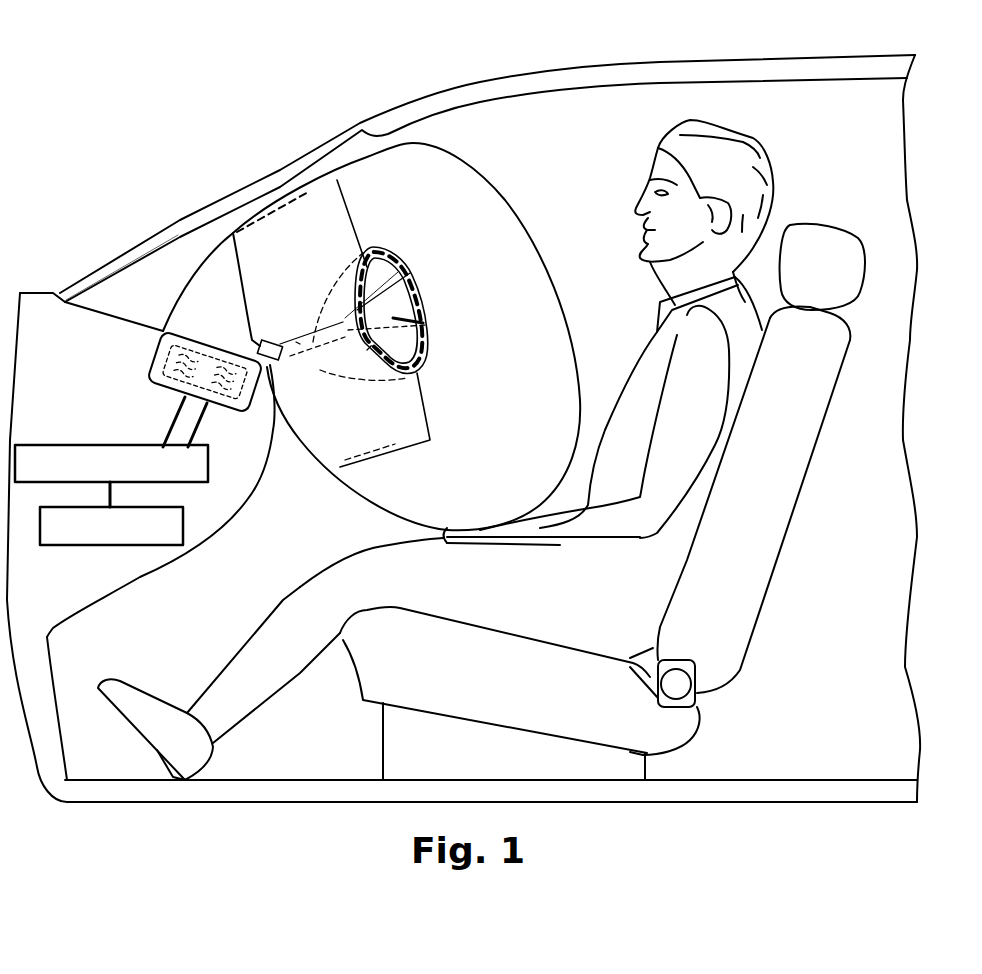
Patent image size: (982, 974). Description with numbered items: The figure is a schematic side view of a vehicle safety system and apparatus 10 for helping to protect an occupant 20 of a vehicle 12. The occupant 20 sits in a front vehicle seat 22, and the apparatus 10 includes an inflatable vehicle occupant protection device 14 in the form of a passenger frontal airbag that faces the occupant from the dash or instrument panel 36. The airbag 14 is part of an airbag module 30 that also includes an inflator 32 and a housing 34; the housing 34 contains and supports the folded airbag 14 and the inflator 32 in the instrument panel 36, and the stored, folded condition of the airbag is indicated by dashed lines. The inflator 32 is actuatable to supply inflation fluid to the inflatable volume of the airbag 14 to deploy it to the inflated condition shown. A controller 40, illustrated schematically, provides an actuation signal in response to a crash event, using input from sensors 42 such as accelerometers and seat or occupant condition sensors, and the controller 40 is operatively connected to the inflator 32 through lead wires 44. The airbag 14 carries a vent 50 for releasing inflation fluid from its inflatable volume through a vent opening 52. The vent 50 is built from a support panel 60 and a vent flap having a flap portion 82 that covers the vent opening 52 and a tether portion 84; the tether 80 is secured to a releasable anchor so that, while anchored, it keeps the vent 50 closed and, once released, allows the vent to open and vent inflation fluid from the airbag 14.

The vehicle safety system and apparatus 10 is at (182, 252).
The vehicle 12 is at (183, 85).
The inflatable vehicle occupant protection device 14 is at (465, 193).
The occupant 20 is at (757, 110).
The front vehicle seat 22 is at (763, 508).
The airbag module 30 is at (200, 315).
The inflator 32 is at (163, 388).
The housing 34 is at (269, 372).
The instrument panel 36 is at (77, 328).
The controller 40 is at (44, 445).
The sensors 42 is at (80, 545).
The lead wires 44 is at (173, 422).
The vent 50 is at (433, 255).
The vent opening 52 is at (407, 303).
The support panel 60 is at (288, 220).
The tether 80 is at (367, 350).
The flap portion 82 is at (425, 321).
The tether portion 84 is at (296, 342).